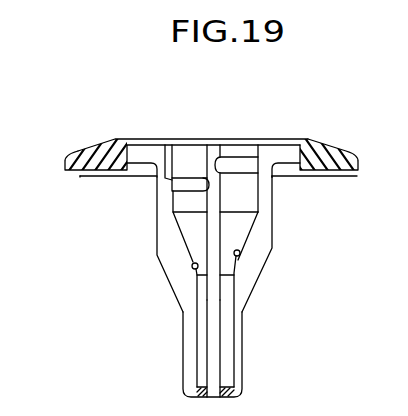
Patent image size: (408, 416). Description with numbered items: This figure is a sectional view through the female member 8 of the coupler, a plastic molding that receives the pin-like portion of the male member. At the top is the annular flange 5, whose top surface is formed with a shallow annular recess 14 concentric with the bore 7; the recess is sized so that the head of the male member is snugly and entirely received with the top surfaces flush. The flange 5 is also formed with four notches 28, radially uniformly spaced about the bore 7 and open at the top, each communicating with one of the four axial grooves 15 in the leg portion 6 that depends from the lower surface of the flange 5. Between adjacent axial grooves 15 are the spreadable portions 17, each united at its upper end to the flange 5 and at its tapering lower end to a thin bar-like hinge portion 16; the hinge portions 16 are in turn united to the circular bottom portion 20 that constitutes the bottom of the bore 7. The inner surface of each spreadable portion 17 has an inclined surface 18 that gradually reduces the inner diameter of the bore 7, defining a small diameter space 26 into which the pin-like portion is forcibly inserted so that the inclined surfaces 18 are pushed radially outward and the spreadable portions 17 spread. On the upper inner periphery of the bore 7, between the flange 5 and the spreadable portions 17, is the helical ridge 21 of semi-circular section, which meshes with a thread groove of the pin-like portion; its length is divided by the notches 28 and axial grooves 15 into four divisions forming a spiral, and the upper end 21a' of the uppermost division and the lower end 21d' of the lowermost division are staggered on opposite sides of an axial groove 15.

The annular recess 14 is at (137, 142).
The notches 28 is at (291, 157).
The flange 5 is at (80, 177).
The leg portion 6 is at (107, 228).
The female member 8 is at (66, 205).
The bore 7 is at (238, 185).
The axial grooves 15 is at (207, 229).
The spreadable portions 17 is at (193, 252).
The inclined surface 18 is at (178, 270).
The hinge portions 16 is at (190, 342).
The bottom portion 20 is at (245, 387).
The small diameter space 26 is at (223, 352).
The ridge 21 is at (183, 168).
The lower end of lowermost ridge division 21d' is at (202, 148).
The upper end of uppermost ridge division 21a' is at (252, 131).